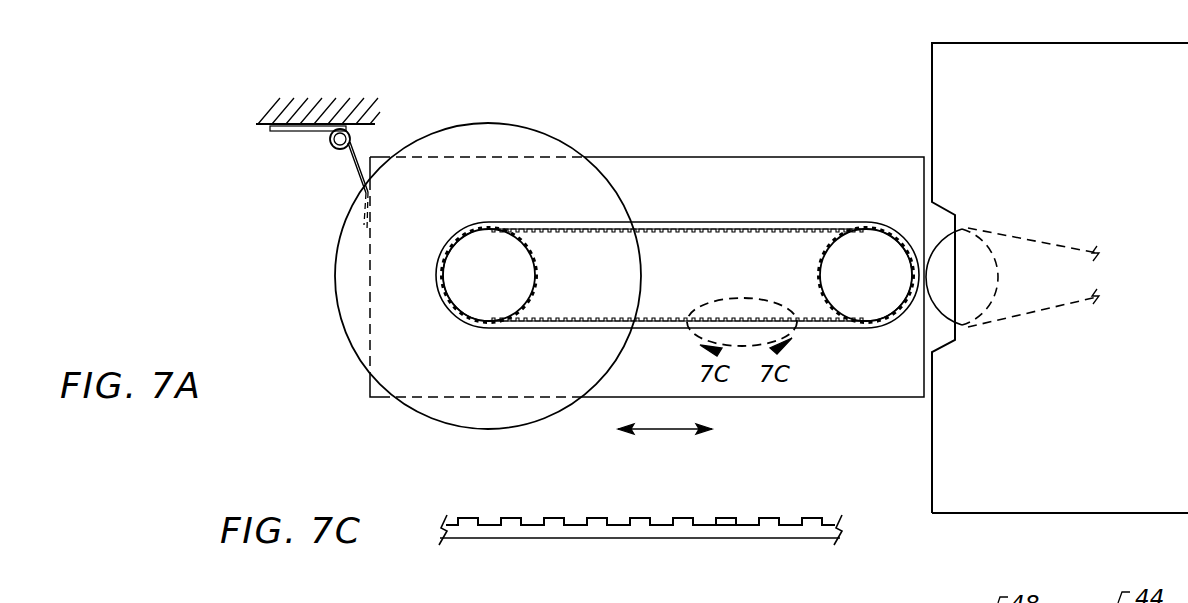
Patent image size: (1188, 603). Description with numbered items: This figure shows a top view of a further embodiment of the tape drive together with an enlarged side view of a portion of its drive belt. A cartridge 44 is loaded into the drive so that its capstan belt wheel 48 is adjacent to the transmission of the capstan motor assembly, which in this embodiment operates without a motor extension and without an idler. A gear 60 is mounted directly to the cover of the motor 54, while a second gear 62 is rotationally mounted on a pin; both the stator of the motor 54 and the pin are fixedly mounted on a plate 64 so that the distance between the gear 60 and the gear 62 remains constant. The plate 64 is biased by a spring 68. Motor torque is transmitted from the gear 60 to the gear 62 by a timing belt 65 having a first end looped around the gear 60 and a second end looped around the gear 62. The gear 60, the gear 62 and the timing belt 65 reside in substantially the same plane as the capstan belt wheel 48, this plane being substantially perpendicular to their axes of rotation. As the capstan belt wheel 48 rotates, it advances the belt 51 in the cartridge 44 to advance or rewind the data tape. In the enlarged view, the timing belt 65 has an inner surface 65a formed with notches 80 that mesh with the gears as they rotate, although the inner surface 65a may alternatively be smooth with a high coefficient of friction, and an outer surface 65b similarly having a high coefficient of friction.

In FIG. 7A, the cartridge 44 is at (1060, 301).
In FIG. 7A, the capstan belt wheel 48 is at (983, 255).
In FIG. 7A, the belt 51 is at (1038, 264).
In FIG. 7A, the motor 54 is at (488, 256).
In FIG. 7A, the gear 60 is at (532, 207).
In FIG. 7A, the gear 62 is at (864, 221).
In FIG. 7A, the plate 64 is at (647, 302).
In FIG. 7A, the timing belt 65 is at (677, 223).
In FIG. 7C, the timing belt 65 is at (620, 518).
In FIG. 7C, the inner surface 65a is at (640, 499).
In FIG. 7C, the outer surface 65b is at (640, 560).
In FIG. 7A, the spring 68 is at (312, 164).
In FIG. 7C, the notches 80 is at (727, 502).